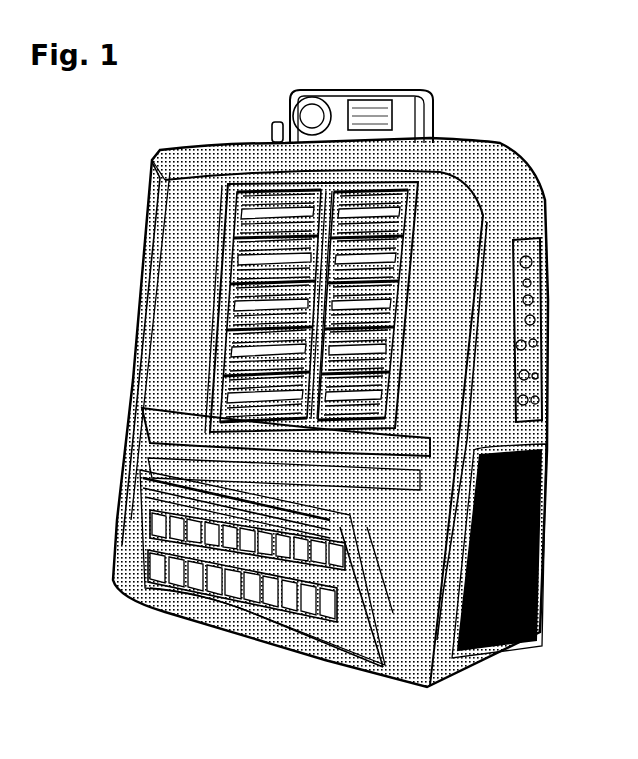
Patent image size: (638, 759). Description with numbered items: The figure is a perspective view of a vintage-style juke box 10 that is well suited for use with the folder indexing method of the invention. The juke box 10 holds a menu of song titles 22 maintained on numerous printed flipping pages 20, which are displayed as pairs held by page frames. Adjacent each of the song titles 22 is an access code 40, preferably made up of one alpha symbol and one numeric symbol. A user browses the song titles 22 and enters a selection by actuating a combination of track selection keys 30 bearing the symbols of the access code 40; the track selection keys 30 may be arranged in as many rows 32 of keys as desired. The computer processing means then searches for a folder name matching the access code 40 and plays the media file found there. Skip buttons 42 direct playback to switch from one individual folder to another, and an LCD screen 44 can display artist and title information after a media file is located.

The juke box 10 is at (138, 136).
The printed flipping pages 20 is at (206, 329).
The song titles 22 is at (227, 250).
The track selection keys 30 is at (223, 595).
The rows 32 is at (137, 518).
The access code 40 is at (237, 203).
The skip buttons 42 is at (517, 338).
The LCD screen 44 is at (430, 112).